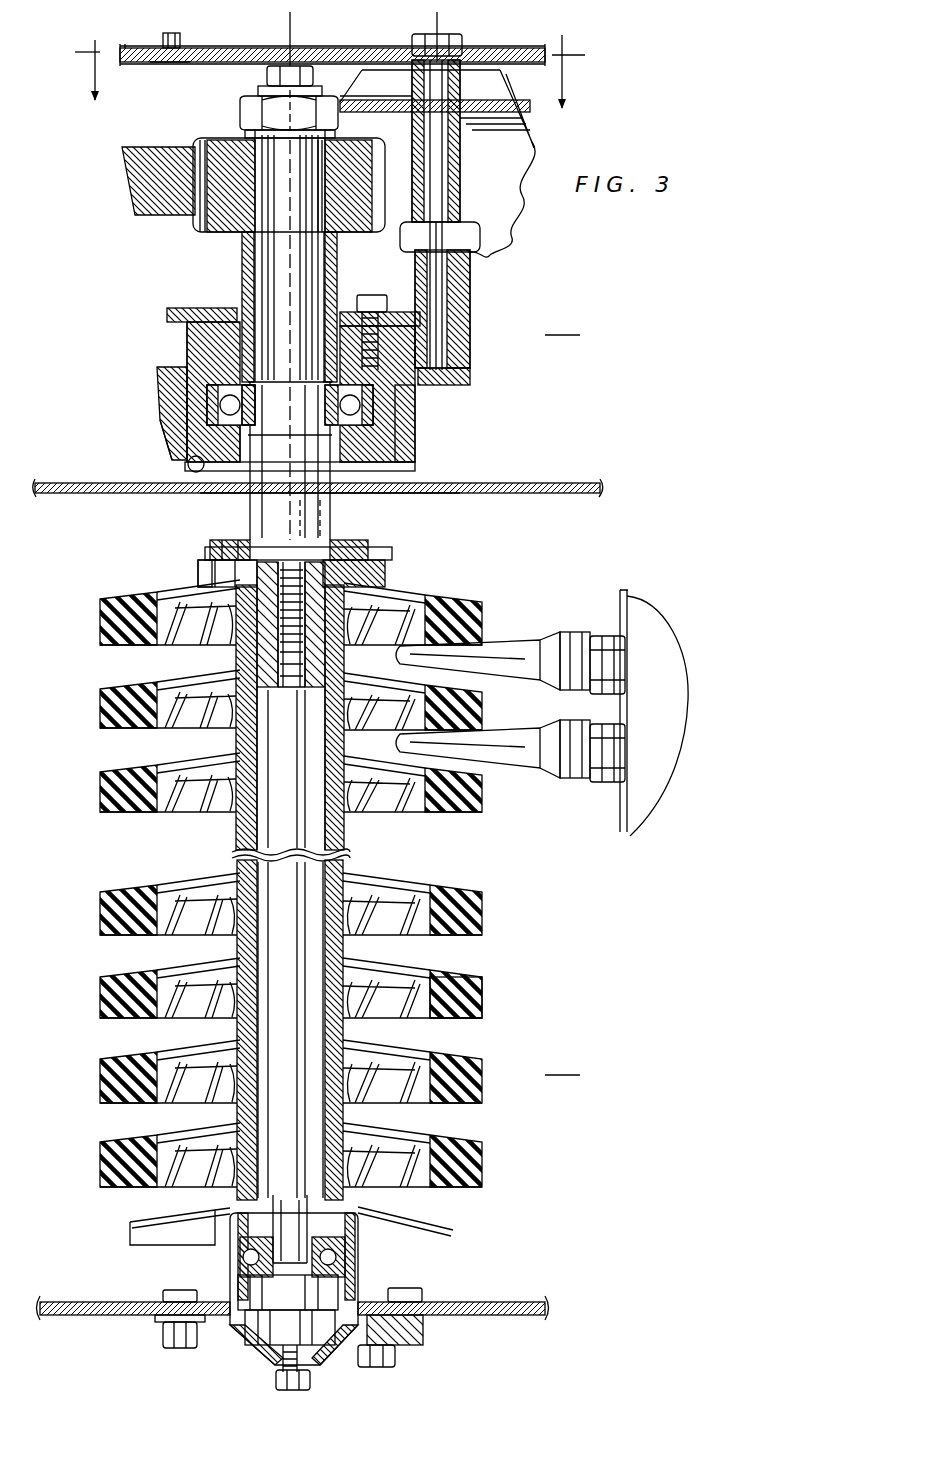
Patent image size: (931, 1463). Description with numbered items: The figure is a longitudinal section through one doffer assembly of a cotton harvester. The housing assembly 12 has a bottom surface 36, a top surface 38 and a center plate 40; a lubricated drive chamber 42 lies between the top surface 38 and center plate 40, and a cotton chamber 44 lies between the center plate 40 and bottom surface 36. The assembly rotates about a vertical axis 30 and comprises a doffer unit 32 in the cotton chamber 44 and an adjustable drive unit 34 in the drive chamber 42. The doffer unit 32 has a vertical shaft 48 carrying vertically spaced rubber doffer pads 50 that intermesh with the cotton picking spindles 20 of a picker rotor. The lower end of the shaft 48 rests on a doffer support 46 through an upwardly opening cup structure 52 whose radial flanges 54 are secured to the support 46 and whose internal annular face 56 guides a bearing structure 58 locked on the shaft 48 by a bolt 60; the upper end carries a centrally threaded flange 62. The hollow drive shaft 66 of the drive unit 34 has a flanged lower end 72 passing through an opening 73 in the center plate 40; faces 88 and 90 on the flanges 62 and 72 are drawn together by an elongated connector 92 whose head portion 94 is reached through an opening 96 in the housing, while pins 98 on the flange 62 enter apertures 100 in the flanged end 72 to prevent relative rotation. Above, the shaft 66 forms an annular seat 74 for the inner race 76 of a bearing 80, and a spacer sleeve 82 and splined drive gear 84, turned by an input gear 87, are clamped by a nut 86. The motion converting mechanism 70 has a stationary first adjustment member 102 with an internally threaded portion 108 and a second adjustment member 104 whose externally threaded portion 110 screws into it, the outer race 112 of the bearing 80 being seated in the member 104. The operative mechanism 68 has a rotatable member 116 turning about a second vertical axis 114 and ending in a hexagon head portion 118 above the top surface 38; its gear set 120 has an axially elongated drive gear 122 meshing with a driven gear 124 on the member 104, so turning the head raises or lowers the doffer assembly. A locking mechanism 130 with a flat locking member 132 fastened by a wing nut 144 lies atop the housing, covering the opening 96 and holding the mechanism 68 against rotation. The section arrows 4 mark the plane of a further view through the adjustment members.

The section line 4 is at (330, 71).
The housing assembly 12 is at (523, 50).
The cotton picking spindles 20 is at (505, 655).
The vertical axis 30 is at (292, 36).
The doffer unit 32 is at (90, 930).
The adjustable drive unit 34 is at (100, 348).
The bottom surface 36 is at (492, 1316).
The top surface 38 is at (530, 56).
The center plate 40 is at (537, 483).
The lubricated drive chamber 42 is at (562, 321).
The cotton chamber 44 is at (562, 1061).
The doffer support 46 is at (96, 1316).
The vertical shaft 48 is at (342, 848).
The doffer pads 50 is at (100, 788).
The cup structure 52 is at (246, 1352).
The radial flanges 54 is at (385, 1366).
The internal annular extending face 56 is at (350, 1286).
The bearing structure 58 is at (226, 1262).
The bolt 60 is at (246, 1295).
The centrally threaded flange 62 is at (198, 578).
The drive shaft 66 is at (335, 498).
The operative mechanism 68 is at (462, 170).
The motion converting mechanism 70 is at (160, 397).
The flanged lower end 72 is at (210, 548).
The opening 73 is at (458, 492).
The annular seat 74 is at (233, 438).
The annular inner race 76 is at (374, 456).
The bearing 80 is at (380, 410).
The spacer sleeve 82 is at (240, 340).
The drive gear 84 is at (392, 242).
The nut 86 is at (240, 116).
The input gear 87 is at (152, 186).
The face 88 is at (345, 550).
The face 90 is at (385, 572).
The elongated rotatable connector 92 is at (332, 522).
The head portion 94 is at (267, 76).
The opening 96 is at (362, 60).
The pins 98 is at (200, 568).
The complementary apertures 100 is at (228, 547).
The first adjustment member 102 is at (422, 388).
The second adjustment member 104 is at (199, 408).
The internally threaded portion 108 is at (190, 462).
The externally threaded portion 110 is at (190, 350).
The outer race 112 is at (174, 440).
The second vertical axis 114 is at (440, 22).
The elongated rotatable member 116 is at (506, 132).
The hexagon head portion 118 is at (462, 46).
The gear set 120 is at (164, 312).
The axially elongated drive gear 122 is at (466, 347).
The driven gear 124 is at (208, 272).
The locking mechanism 130 is at (238, 47).
The locking member 132 is at (145, 48).
The locking wing nut 144 is at (173, 62).